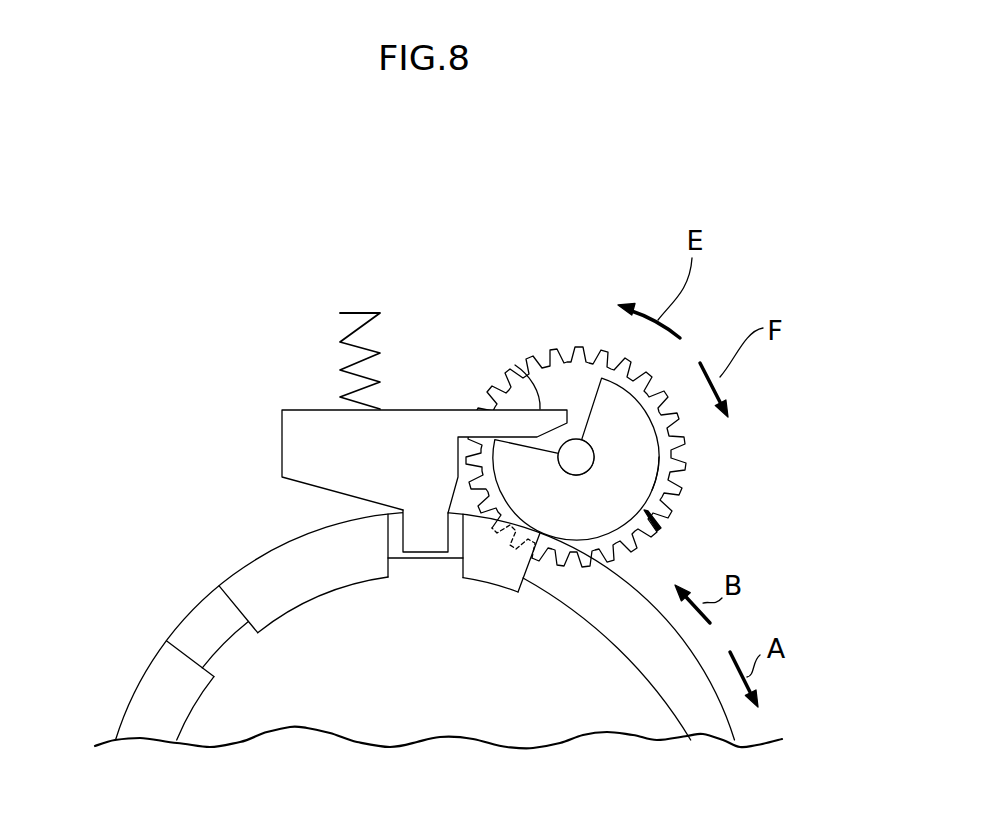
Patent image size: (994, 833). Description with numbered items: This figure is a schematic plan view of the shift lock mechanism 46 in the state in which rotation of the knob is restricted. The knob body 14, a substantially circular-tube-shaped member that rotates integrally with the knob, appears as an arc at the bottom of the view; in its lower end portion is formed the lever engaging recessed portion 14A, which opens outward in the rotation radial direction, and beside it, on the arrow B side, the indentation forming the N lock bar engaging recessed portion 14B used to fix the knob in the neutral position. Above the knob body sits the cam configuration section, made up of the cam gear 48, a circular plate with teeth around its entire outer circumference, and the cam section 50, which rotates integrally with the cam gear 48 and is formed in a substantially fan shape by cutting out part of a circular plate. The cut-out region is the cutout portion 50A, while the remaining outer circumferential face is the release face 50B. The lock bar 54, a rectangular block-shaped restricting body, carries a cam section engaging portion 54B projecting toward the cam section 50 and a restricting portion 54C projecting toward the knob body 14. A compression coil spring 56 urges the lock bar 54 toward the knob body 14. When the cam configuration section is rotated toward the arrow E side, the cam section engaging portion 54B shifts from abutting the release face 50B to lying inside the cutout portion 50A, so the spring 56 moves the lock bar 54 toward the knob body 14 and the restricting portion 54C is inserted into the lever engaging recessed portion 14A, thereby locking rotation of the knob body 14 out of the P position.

The knob body 14 is at (131, 703).
The lever engaging recessed portion 14A is at (388, 567).
The N lock bar engaging recessed portion 14B is at (215, 596).
The shift lock mechanism 46 is at (556, 399).
The cam gear 48 is at (688, 475).
The cam section 50 is at (660, 529).
The cutout portion 50A is at (593, 399).
The release face 50B is at (668, 487).
The lock bar 54 is at (294, 410).
The cam section engaging portion 54B is at (515, 365).
The restricting portion 54C is at (425, 558).
The spring 56 is at (386, 313).